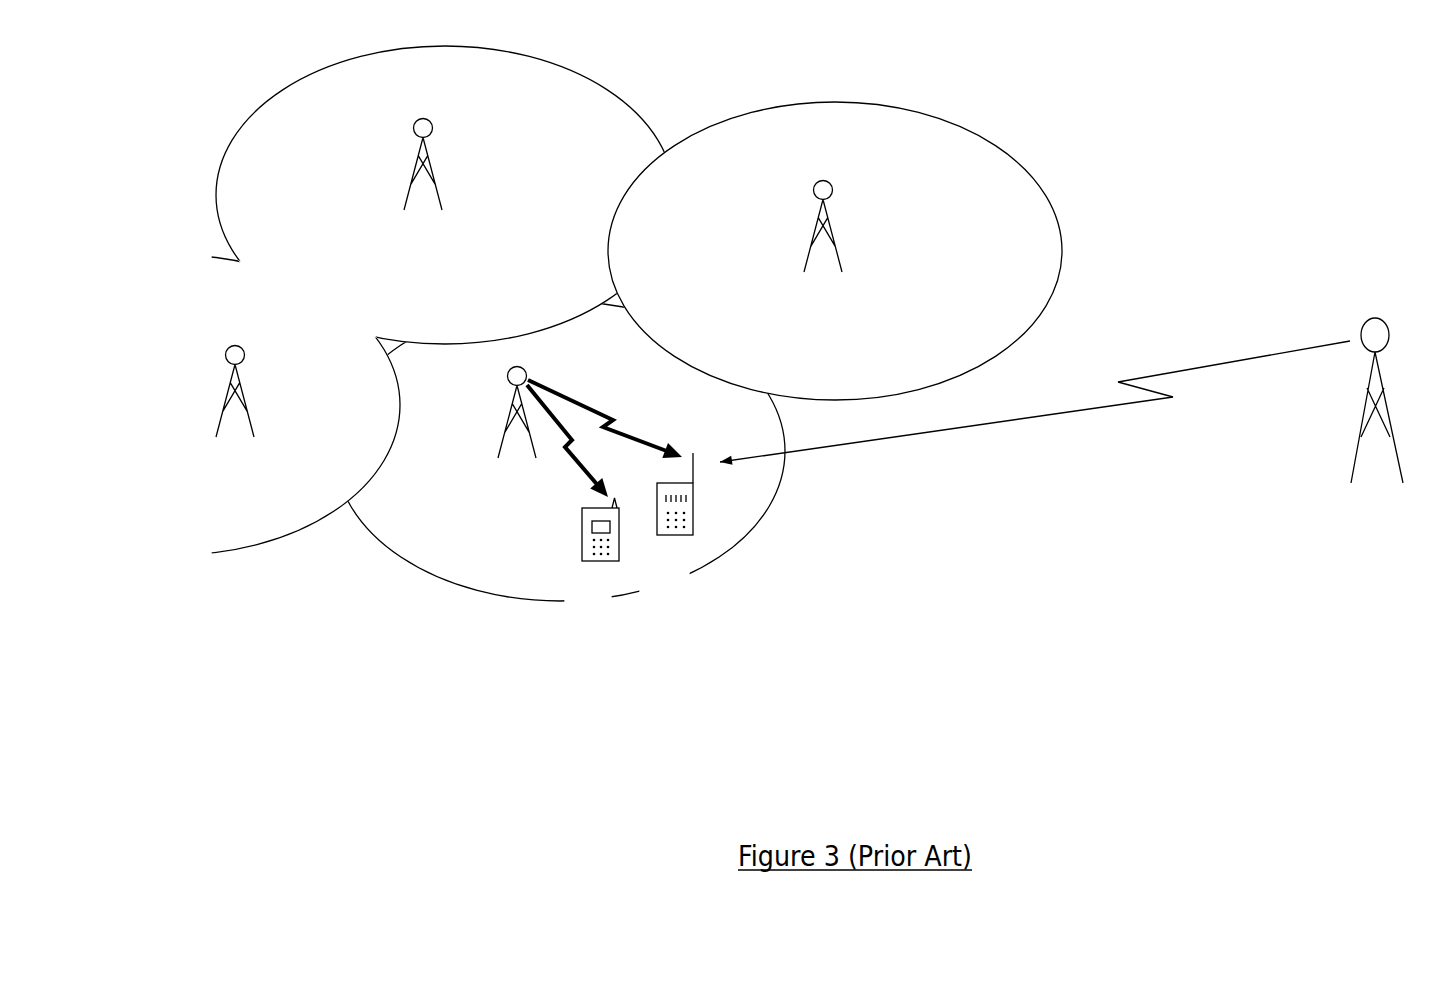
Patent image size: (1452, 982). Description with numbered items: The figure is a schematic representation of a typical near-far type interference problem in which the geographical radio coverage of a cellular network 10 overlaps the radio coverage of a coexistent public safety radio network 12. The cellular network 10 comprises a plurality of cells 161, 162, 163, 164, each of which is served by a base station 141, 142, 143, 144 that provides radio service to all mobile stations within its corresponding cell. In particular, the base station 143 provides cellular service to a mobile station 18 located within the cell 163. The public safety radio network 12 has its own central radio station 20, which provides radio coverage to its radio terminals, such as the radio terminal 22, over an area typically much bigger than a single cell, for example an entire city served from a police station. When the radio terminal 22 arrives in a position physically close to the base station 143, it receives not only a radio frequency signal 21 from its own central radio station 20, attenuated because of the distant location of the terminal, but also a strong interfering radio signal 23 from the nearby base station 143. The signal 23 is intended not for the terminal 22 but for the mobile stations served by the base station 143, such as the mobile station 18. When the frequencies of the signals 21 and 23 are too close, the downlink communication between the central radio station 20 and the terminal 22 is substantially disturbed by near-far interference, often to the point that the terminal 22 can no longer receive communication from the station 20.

The cellular network 10 is at (575, 665).
The public safety radio network 12 is at (1240, 518).
The base station 141 is at (413, 172).
The base station 142 is at (813, 235).
The base station 143 is at (505, 425).
The base station 144 is at (222, 398).
The cell 161 is at (616, 93).
The cell 162 is at (1058, 278).
The cell 163 is at (785, 478).
The cell 164 is at (297, 533).
The mobile station 18 is at (605, 562).
The central radio station 20 is at (1386, 398).
The radio frequency signal 21 is at (975, 425).
The radio terminal 22 is at (682, 537).
The interfering radio signal 23 is at (548, 384).